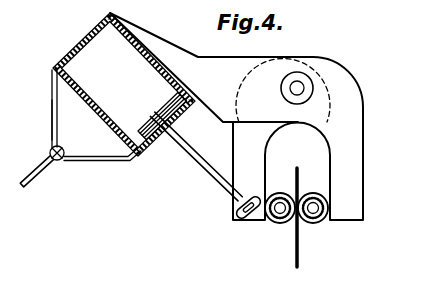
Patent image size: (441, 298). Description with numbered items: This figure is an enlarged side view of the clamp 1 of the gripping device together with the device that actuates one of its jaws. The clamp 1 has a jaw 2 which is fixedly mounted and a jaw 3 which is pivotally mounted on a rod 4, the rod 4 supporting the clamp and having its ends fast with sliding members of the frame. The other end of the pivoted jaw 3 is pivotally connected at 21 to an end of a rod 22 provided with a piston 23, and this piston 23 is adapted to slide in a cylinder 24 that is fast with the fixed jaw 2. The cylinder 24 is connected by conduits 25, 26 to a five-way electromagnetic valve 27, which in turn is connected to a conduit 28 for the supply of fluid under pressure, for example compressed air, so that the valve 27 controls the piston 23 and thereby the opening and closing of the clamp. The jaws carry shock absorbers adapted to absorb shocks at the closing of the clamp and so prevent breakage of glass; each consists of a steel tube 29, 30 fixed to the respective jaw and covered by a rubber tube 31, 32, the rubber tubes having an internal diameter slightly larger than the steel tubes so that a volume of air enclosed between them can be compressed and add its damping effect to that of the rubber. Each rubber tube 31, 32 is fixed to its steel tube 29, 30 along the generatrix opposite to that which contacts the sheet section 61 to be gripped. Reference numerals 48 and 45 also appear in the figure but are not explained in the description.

The clamp 1 is at (300, 86).
The jaw 2 is at (238, 70).
The jaw 3 is at (250, 147).
The rod 4 is at (308, 65).
The pivotal connection 21 is at (237, 212).
The rod 22 is at (210, 170).
The piston 23 is at (162, 140).
The cylinder 24 is at (80, 65).
The conduit 25 is at (110, 162).
The conduit 26 is at (54, 80).
The five-way electromagnetic valve 27 is at (48, 150).
The conduit 28 is at (48, 153).
The steel tube 29 is at (311, 222).
The steel tube 30 is at (284, 222).
The rubber tube 31 is at (316, 222).
The rubber tube 32 is at (283, 221).
The sheet section 61 is at (300, 176).
The element 48 is at (10, 268).
The element 45 is at (13, 288).